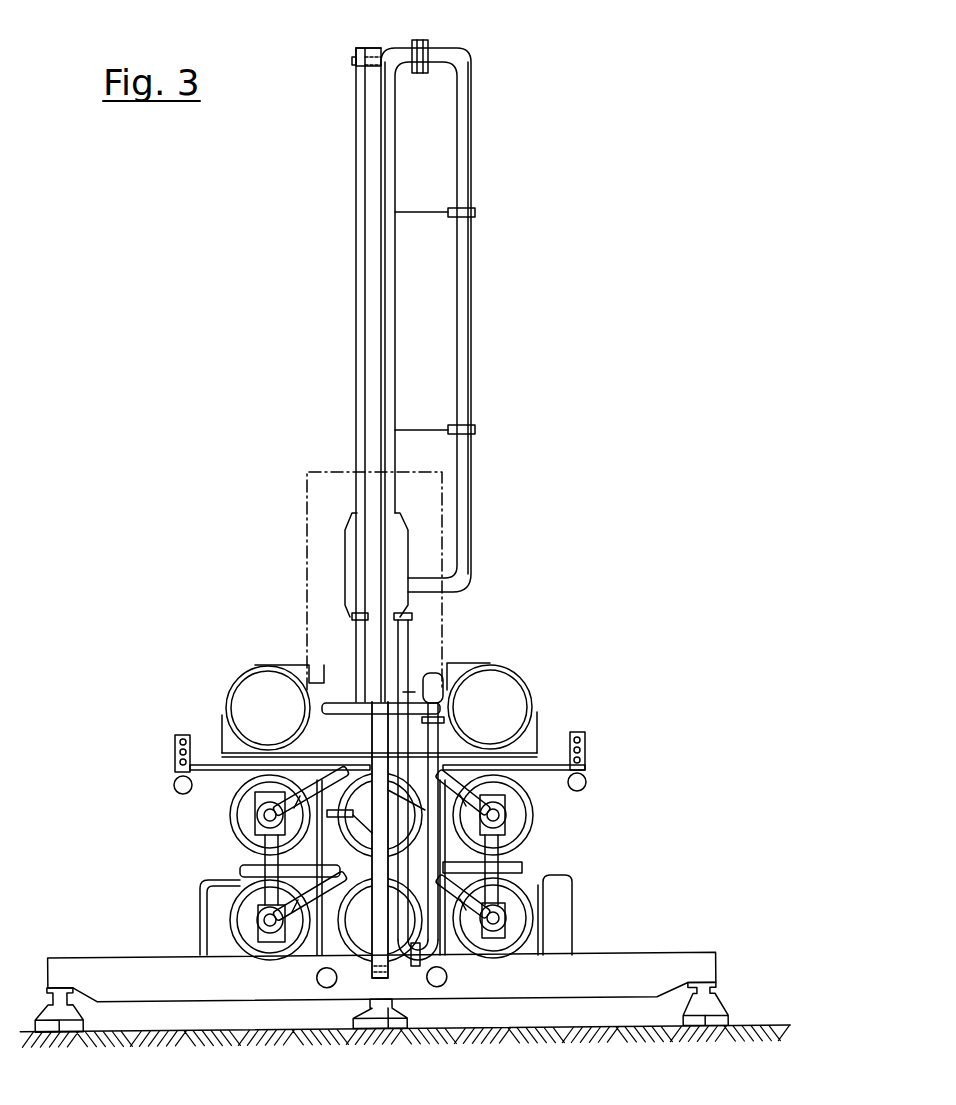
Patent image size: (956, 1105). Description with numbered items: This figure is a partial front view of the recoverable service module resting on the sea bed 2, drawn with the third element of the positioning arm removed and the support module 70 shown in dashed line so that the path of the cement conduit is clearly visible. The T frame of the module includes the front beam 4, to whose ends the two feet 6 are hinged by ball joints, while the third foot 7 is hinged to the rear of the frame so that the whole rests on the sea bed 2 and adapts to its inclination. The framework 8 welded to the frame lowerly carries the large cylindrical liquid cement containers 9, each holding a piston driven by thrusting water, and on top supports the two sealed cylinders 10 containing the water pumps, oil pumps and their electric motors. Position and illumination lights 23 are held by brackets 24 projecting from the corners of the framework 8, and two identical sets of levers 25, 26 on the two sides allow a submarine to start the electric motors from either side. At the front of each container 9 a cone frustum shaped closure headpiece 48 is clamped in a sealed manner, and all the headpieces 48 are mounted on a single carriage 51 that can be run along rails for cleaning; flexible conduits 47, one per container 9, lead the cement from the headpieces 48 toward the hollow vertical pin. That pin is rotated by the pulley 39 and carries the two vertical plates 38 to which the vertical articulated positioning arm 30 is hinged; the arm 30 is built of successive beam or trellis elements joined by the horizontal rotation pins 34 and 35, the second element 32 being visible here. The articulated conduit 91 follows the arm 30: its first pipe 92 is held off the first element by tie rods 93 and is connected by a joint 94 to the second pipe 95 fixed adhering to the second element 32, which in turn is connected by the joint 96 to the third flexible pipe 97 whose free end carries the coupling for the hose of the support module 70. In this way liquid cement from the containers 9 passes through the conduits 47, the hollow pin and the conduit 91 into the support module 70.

The sea bed 2 is at (742, 1026).
The front beam 4 is at (670, 958).
The feet 6 is at (62, 1012).
The third foot 7 is at (381, 1036).
The framework 8 is at (508, 760).
The cylindrical liquid cement containers 9 is at (232, 815).
The sealed cylinders 10 is at (266, 688).
The position lights and illumination lights 23 is at (174, 757).
The brackets 24 is at (196, 764).
The set of levers 25 is at (574, 941).
The set of levers 26 is at (200, 896).
The vertical articulated positioning arm 30 is at (352, 374).
The second element 32 is at (370, 200).
The horizontal rotation pin 34 is at (372, 50).
The horizontal rotation pin 35 is at (362, 1010).
The vertical plates 38 is at (352, 556).
The pulley 39 is at (326, 700).
The flexible conduits 47 is at (322, 795).
The closure headpieces 48 is at (257, 830).
The carriage 51 is at (500, 848).
The support module 70 is at (307, 492).
The articulated conduit 91 is at (480, 302).
The first pipe 92 is at (466, 350).
The tie rods 93 is at (446, 210).
The joint 94 is at (428, 45).
The second pipe 95 is at (388, 305).
The joint 96 is at (418, 967).
The third flexible pipe 97 is at (428, 785).